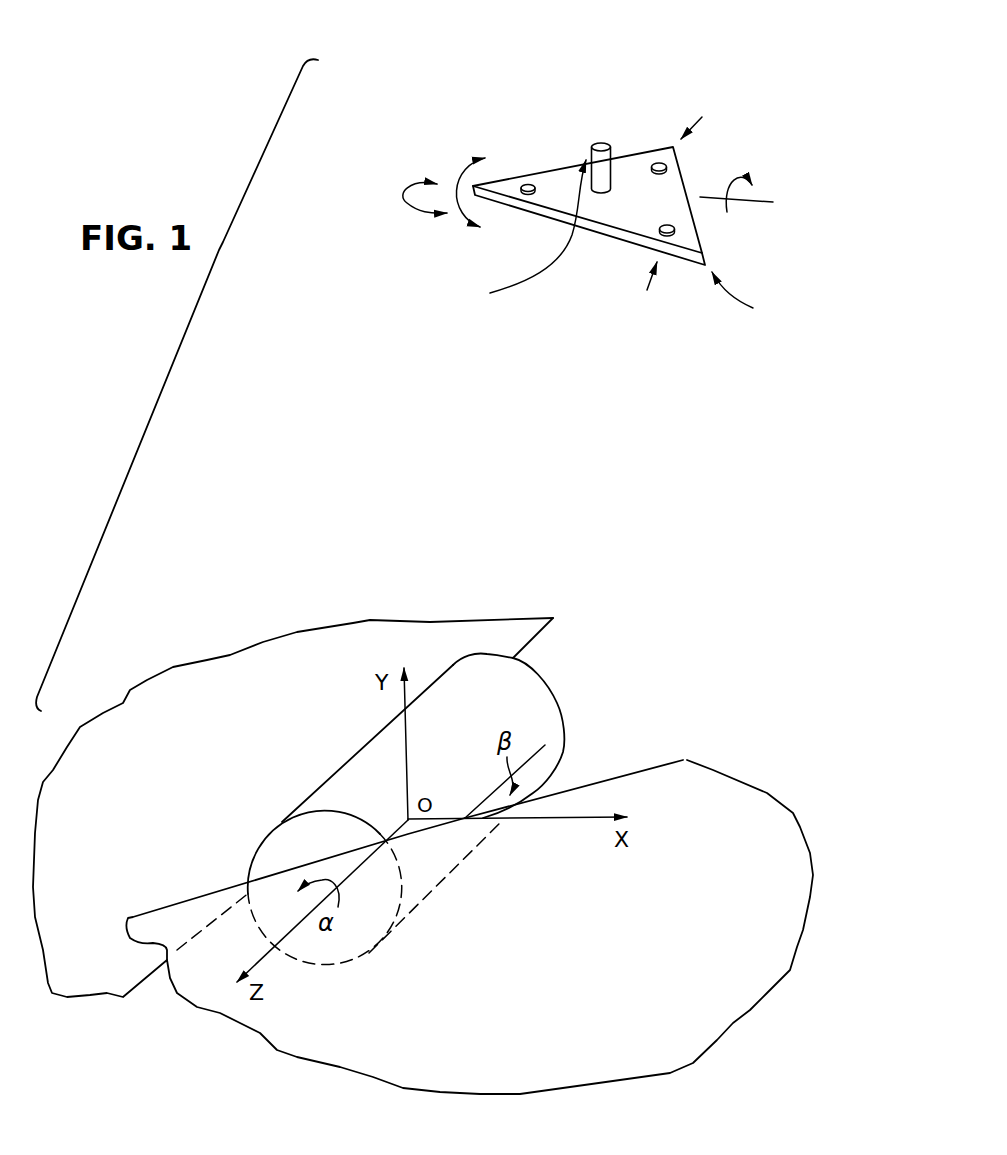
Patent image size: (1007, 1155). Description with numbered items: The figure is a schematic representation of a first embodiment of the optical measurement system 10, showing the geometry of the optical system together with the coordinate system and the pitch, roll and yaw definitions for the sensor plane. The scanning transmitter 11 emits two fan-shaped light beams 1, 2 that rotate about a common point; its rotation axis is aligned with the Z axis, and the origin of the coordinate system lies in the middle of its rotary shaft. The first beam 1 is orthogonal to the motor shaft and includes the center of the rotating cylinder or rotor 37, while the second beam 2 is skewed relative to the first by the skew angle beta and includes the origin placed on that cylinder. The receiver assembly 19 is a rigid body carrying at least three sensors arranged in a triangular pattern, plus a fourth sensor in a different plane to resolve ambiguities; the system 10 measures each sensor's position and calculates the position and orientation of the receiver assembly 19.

The first fan-shaped beam 1 is at (527, 638).
The second fan-shaped beam 2 is at (577, 789).
The inventive system 10 is at (272, 398).
The scanning transmitter 11 is at (755, 1032).
The receiver assembly 19 is at (625, 83).
The rotor 37 is at (537, 698).